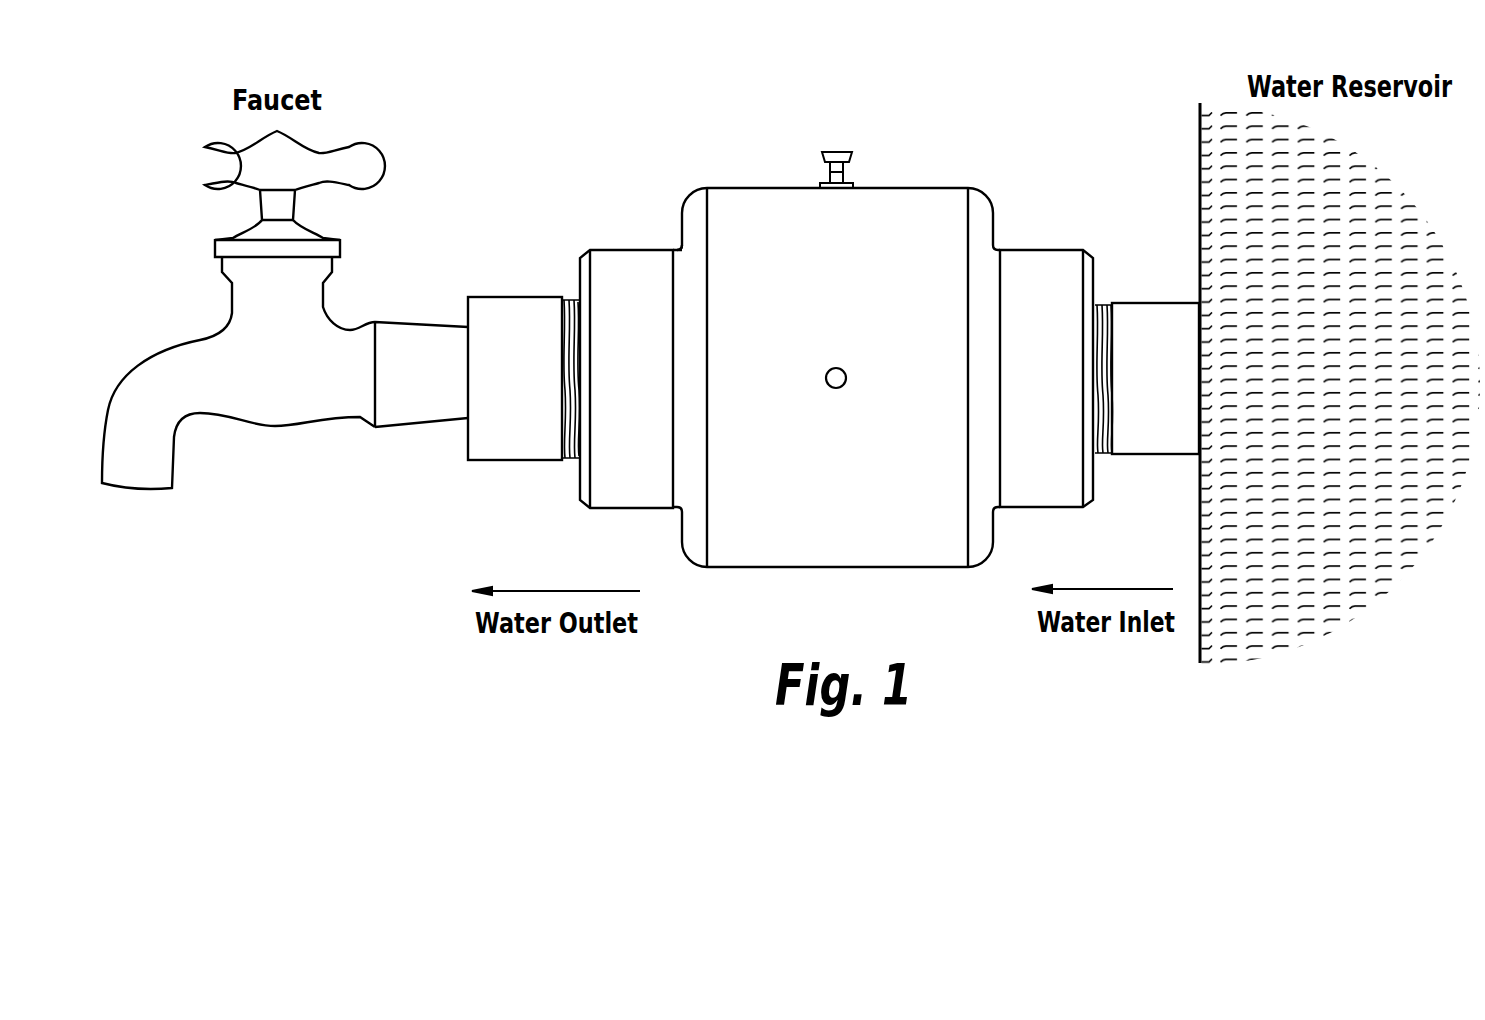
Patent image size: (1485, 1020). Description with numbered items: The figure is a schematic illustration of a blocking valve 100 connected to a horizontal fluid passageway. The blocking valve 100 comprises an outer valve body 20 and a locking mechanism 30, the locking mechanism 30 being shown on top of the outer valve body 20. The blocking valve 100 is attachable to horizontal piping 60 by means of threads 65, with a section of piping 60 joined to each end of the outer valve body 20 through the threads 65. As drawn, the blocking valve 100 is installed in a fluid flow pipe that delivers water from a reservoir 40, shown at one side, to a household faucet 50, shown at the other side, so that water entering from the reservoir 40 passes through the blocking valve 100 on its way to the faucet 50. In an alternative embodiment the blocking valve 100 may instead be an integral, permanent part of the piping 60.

The blocking valve 100 is at (963, 130).
The outer valve body 20 is at (613, 272).
The locking mechanism 30 is at (837, 140).
The reservoir 40 is at (1343, 572).
The household faucet 50 is at (282, 392).
The horizontal piping 60 is at (512, 315).
The threads 65 is at (575, 460).